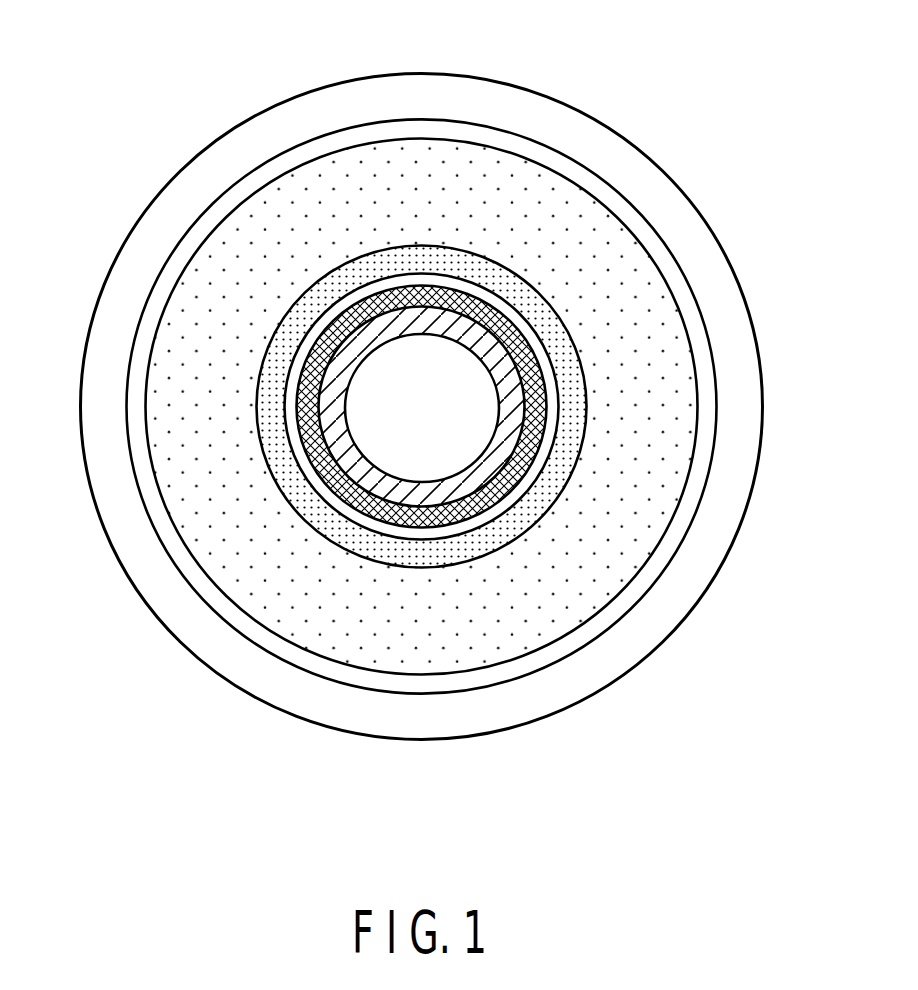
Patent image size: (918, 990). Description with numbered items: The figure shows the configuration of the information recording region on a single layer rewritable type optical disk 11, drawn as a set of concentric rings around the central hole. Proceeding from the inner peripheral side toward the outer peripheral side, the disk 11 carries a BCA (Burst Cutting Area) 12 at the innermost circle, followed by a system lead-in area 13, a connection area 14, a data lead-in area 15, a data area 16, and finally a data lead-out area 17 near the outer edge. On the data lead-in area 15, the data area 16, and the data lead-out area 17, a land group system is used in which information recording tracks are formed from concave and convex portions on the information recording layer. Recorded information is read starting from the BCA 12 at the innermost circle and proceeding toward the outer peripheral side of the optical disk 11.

The optical disk 11 is at (257, 112).
The BCA (Burst Cutting Area) 12 is at (392, 290).
The system lead-in area 13 is at (430, 288).
The connection area 14 is at (463, 288).
The data lead-in area 15 is at (262, 417).
The data area 16 is at (678, 412).
The data lead-out area 17 is at (670, 547).